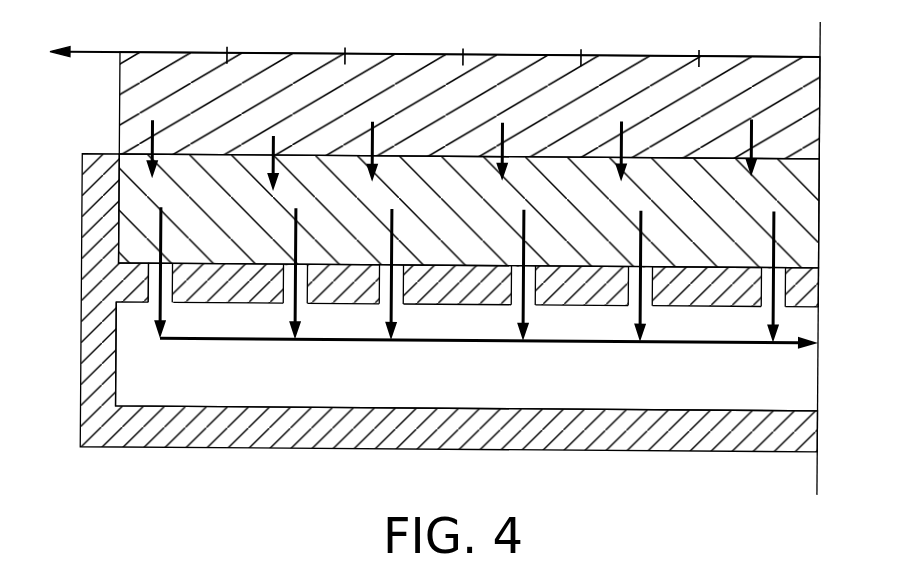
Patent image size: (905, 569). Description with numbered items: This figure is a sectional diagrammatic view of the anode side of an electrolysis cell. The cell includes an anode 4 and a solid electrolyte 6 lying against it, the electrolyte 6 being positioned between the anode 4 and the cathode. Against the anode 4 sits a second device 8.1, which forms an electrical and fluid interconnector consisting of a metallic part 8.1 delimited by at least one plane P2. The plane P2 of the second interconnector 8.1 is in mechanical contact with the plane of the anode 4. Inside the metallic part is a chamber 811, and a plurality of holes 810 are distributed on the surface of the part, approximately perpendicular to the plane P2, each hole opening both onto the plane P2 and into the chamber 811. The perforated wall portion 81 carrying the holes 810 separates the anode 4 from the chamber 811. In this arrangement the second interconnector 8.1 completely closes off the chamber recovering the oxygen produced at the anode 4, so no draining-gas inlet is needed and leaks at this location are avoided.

The electrolyte 6 is at (143, 110).
The anode 4 is at (140, 213).
The second interconnector 8.1 is at (97, 380).
The perforated plate 81 is at (130, 293).
The holes 810 is at (167, 292).
The chamber 811 is at (488, 395).
The plane P2 is at (817, 262).